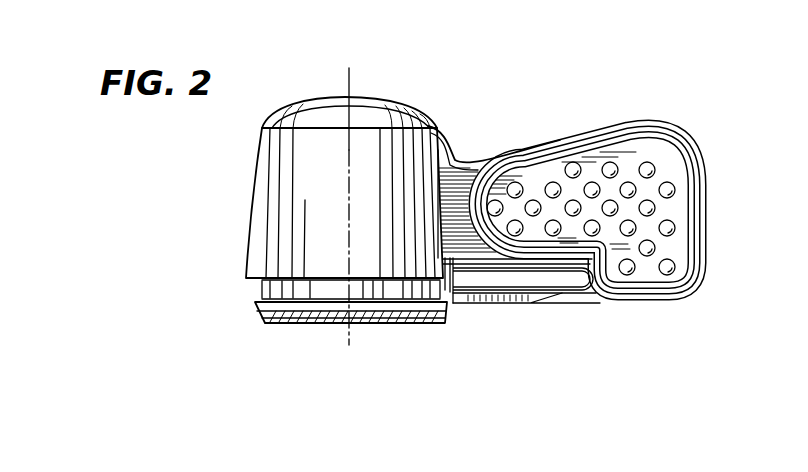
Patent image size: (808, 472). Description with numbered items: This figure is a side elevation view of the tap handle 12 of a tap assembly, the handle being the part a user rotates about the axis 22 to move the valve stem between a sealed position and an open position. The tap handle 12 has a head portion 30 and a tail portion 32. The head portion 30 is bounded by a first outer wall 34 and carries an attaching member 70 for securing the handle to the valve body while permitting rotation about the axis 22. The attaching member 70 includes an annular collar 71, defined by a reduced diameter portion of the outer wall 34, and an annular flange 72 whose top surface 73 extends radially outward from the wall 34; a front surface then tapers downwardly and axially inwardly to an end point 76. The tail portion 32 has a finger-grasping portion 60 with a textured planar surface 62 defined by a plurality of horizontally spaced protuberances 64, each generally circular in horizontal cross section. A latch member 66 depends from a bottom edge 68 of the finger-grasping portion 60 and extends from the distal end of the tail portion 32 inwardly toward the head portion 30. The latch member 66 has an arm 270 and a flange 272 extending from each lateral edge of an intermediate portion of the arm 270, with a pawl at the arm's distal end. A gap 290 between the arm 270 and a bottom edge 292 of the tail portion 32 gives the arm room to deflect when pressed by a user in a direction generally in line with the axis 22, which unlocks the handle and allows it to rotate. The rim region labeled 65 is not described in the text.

The tap handle 12 is at (300, 92).
The axis 22 is at (352, 80).
The head portion 30 is at (265, 198).
The first outer wall 34 is at (282, 231).
The finger-grasping portion 60 is at (598, 130).
The textured planar surface 62 is at (535, 184).
The protuberances 64 is at (670, 224).
The rim 65 is at (625, 121).
The tail portion 32 is at (643, 157).
The latch member 66 is at (470, 318).
The bottom edge 68 is at (643, 308).
The attaching member 70 is at (232, 309).
The annular collar 71 is at (248, 290).
The annular flange 72 is at (253, 311).
The top surface 73 is at (255, 300).
The end point 76 is at (262, 323).
The arm 270 is at (557, 300).
The flange 272 is at (483, 303).
The gap 290 is at (545, 276).
The bottom edge 292 is at (448, 303).